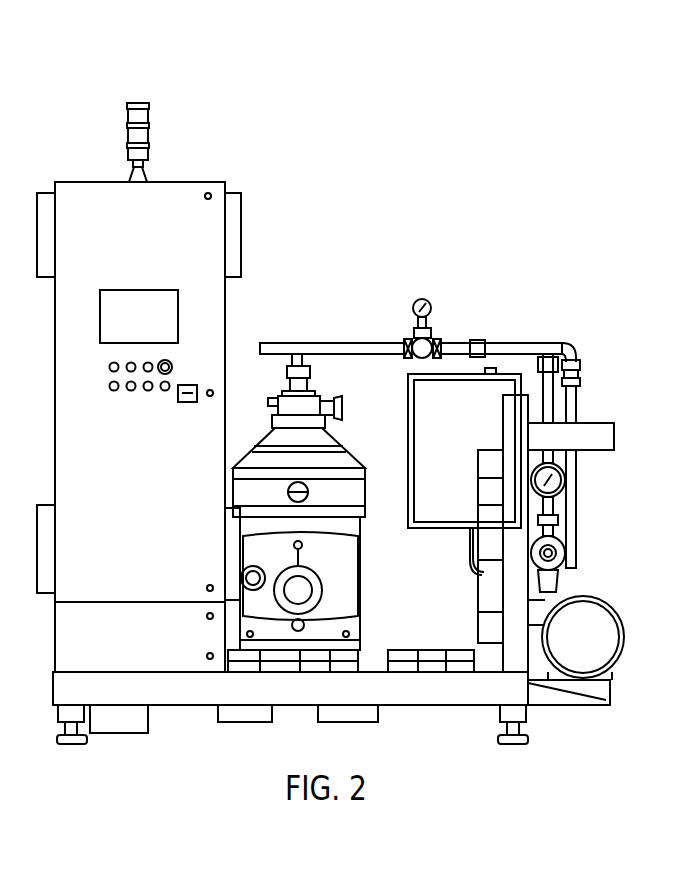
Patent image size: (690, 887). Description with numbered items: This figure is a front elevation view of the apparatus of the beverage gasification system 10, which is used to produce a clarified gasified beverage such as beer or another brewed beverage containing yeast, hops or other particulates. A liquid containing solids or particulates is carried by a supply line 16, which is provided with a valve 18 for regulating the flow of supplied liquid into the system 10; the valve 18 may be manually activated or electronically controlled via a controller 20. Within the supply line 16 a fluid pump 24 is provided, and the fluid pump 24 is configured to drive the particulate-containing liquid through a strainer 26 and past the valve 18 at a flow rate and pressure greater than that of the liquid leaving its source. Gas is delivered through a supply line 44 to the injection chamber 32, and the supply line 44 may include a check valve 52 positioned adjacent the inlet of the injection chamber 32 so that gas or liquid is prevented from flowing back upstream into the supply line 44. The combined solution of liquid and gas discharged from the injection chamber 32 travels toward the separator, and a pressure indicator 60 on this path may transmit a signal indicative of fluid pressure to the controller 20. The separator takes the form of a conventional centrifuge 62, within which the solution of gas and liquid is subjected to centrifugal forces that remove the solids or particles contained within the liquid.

The system 10 is at (183, 60).
The controller 20 is at (186, 200).
The centrifuge 62 is at (345, 458).
The check valve 52 is at (364, 343).
The pressure indicator 60 is at (428, 322).
The injection chamber 32 is at (521, 343).
The supply line 44 is at (577, 380).
The supply line 16 is at (577, 415).
The valve 18 is at (577, 485).
The strainer 26 is at (585, 550).
The fluid pump 24 is at (608, 640).